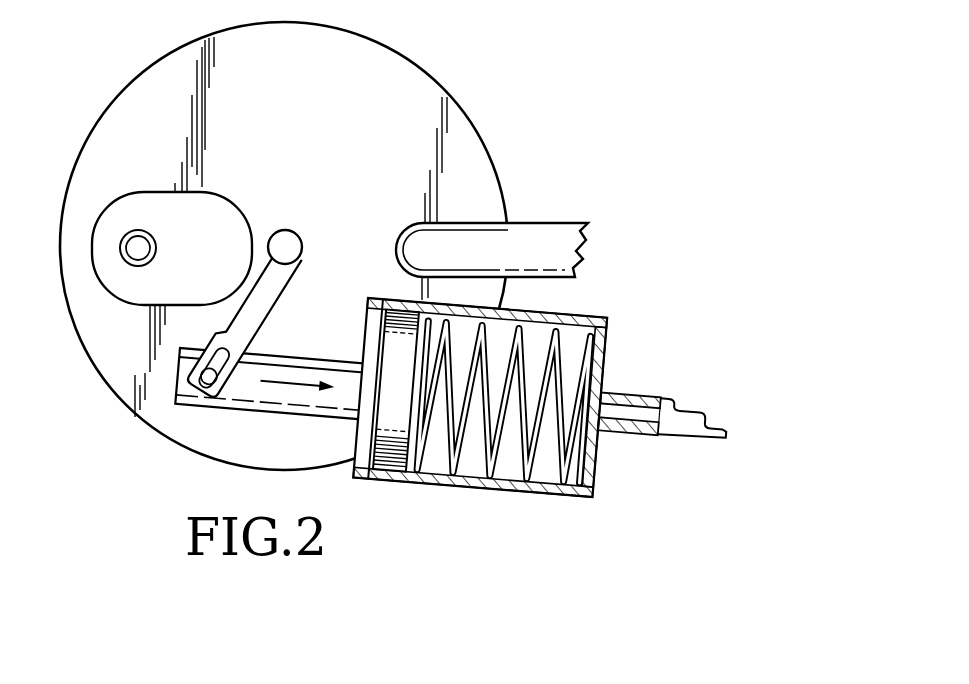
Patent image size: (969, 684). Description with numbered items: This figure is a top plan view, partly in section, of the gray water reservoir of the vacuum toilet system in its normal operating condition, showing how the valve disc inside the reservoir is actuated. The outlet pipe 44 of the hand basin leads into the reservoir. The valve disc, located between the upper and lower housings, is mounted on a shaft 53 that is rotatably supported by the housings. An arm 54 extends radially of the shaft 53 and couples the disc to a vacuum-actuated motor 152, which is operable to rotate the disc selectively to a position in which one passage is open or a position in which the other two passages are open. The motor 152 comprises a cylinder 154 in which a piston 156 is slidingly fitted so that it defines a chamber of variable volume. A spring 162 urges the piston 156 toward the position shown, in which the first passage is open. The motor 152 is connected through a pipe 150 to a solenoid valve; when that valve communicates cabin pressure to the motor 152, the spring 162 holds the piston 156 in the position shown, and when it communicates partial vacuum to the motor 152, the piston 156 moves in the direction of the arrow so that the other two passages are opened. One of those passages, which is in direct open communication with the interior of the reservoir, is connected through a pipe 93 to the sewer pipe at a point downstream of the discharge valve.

The outlet pipe 44 is at (143, 267).
The shaft 53 is at (299, 231).
The arm 54 is at (263, 326).
The pipe 93 is at (553, 222).
The pipe 150 is at (690, 398).
The vacuum-actuated motor 152 is at (484, 512).
The cylinder 154 is at (598, 453).
The piston 156 is at (402, 482).
The spring 162 is at (532, 467).